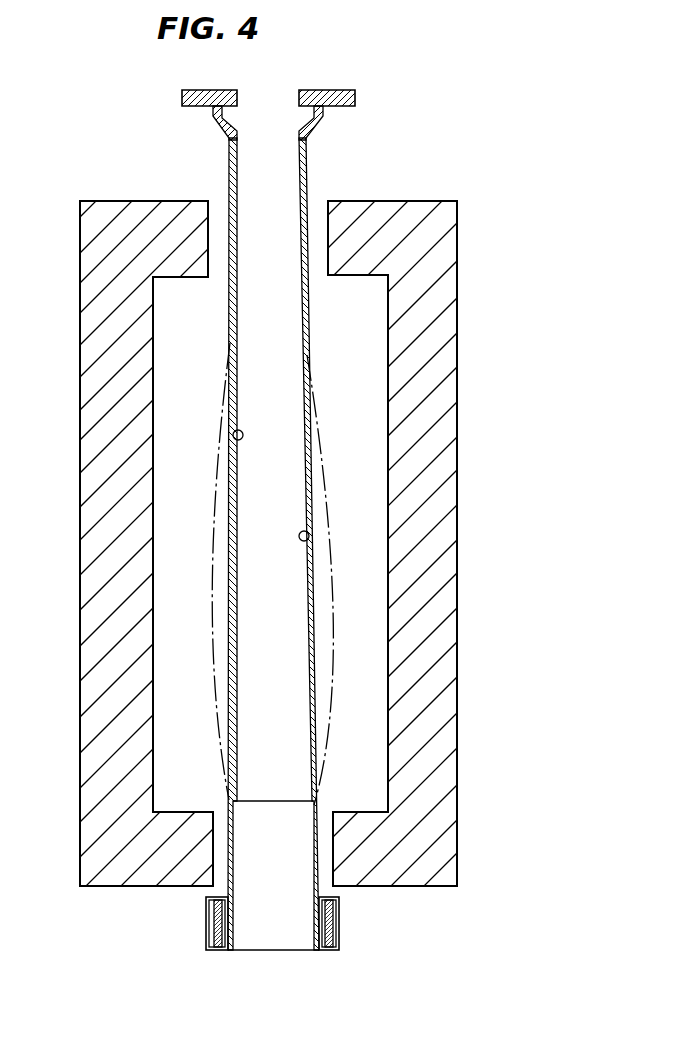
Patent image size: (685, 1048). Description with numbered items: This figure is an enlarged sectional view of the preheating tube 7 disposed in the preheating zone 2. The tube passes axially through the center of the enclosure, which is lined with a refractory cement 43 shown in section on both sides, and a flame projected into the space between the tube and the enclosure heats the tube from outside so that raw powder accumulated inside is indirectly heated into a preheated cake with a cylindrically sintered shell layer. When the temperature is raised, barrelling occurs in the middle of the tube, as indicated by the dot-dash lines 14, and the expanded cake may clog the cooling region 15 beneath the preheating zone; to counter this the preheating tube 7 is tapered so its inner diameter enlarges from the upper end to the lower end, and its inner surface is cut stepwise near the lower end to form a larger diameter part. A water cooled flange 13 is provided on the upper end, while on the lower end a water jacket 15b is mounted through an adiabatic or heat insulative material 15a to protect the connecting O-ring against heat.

The preheating zone 2 is at (392, 183).
The preheating tube 7 is at (233, 436).
The water cooled flange 13 is at (345, 90).
The dot-dash lines 14 is at (212, 612).
The cooling region 15 is at (287, 957).
The adiabatic or heat insulative material 15a is at (237, 920).
The water jacket 15b is at (207, 928).
The refractory cement 43 is at (445, 320).